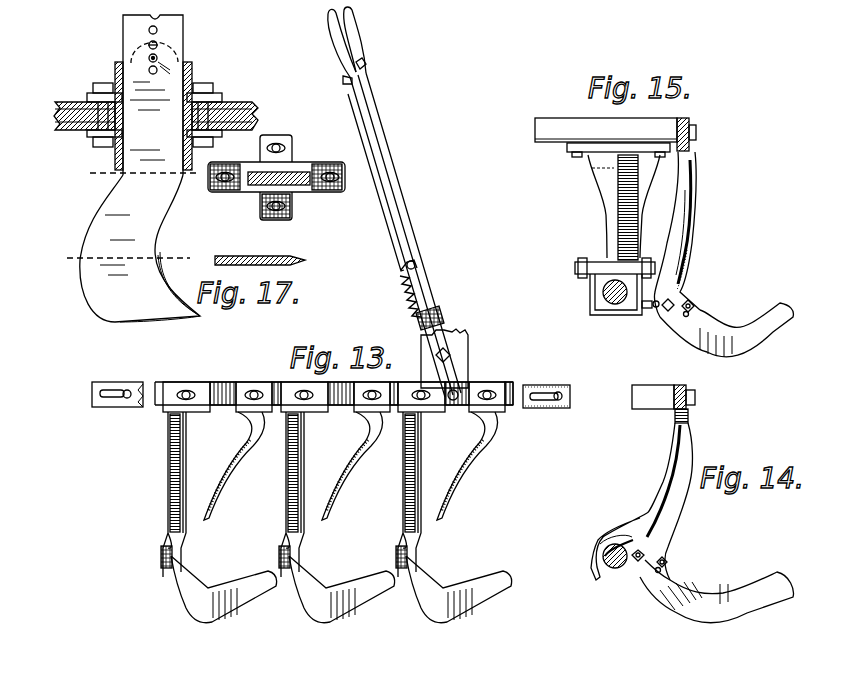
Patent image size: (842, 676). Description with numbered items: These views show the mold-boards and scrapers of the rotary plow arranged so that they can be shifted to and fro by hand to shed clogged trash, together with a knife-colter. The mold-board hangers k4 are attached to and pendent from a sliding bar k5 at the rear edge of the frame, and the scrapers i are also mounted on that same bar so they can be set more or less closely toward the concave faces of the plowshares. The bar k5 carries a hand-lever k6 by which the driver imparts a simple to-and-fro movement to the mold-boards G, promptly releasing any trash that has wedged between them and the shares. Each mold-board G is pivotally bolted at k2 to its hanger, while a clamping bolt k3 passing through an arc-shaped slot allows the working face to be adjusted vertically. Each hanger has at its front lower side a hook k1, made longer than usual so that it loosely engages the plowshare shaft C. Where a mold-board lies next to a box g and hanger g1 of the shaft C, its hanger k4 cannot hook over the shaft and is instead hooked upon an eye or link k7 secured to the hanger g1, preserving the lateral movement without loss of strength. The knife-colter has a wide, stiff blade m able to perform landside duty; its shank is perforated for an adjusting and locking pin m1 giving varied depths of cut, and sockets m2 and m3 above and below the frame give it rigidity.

In FIG. 17, the blade m is at (306, 150).
In FIG. 17, the adjusting and locking pin m1 is at (156, 57).
In FIG. 17, the socket m2 is at (178, 58).
In FIG. 17, the socket m3 is at (320, 205).
In FIG. 13, the mold-board hanger k4 is at (330, 502).
In FIG. 15, the mold-board hanger k4 is at (688, 234).
In FIG. 14, the mold-board hanger k4 is at (641, 501).
In FIG. 13, the mold-board G is at (370, 596).
In FIG. 15, the mold-board G is at (726, 330).
In FIG. 14, the mold-board G is at (716, 591).
In FIG. 13, the scraper i is at (354, 451).
In FIG. 13, the sliding bar k5 is at (545, 385).
In FIG. 13, the hand-lever k6 is at (398, 203).
In FIG. 15, the hanger g1 is at (618, 201).
In FIG. 15, the box g is at (613, 286).
In FIG. 15, the shaft C is at (616, 302).
In FIG. 14, the shaft C is at (618, 570).
In FIG. 15, the hook k1 is at (651, 308).
In FIG. 14, the hook k1 is at (598, 570).
In FIG. 15, the eye or link k7 is at (668, 312).
In FIG. 14, the pivot bolt k2 is at (644, 553).
In FIG. 14, the clamping bolt k3 is at (667, 561).